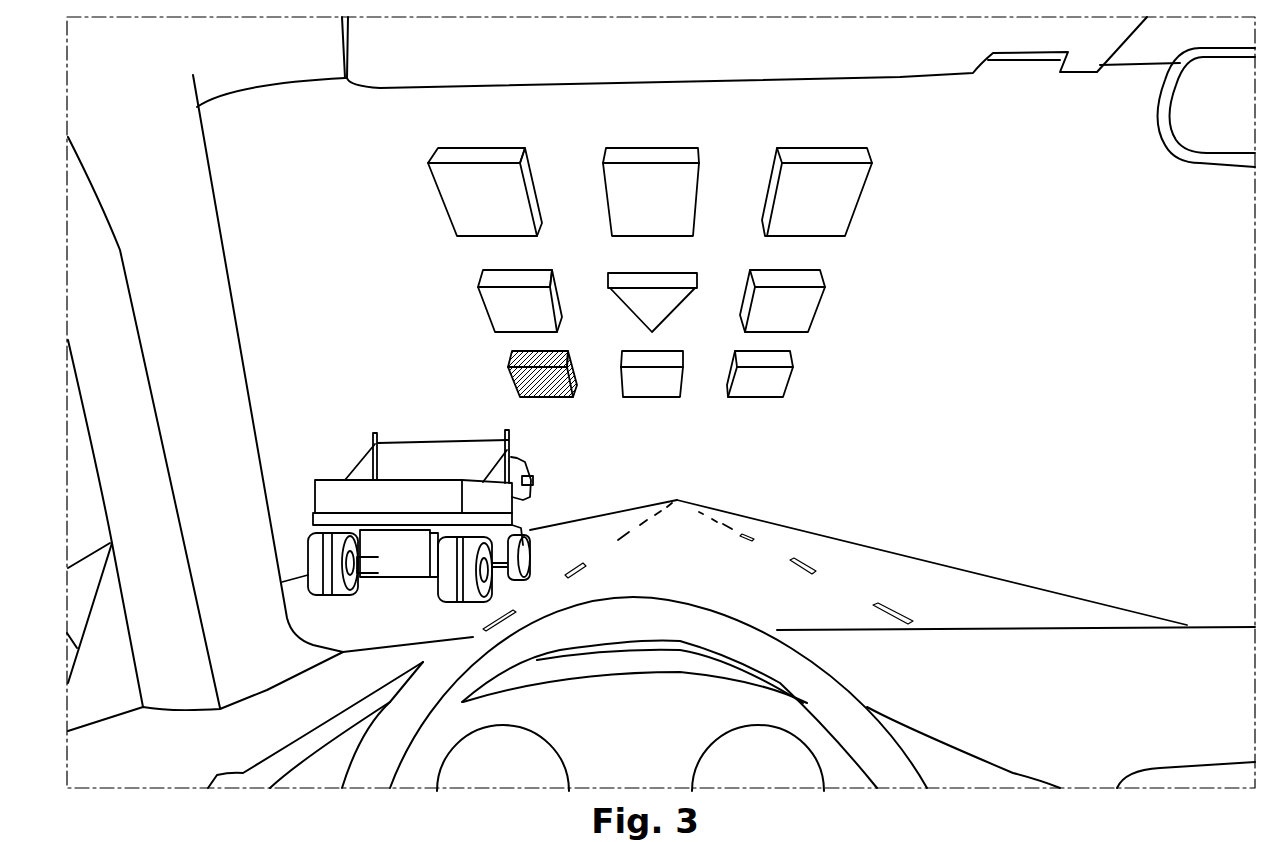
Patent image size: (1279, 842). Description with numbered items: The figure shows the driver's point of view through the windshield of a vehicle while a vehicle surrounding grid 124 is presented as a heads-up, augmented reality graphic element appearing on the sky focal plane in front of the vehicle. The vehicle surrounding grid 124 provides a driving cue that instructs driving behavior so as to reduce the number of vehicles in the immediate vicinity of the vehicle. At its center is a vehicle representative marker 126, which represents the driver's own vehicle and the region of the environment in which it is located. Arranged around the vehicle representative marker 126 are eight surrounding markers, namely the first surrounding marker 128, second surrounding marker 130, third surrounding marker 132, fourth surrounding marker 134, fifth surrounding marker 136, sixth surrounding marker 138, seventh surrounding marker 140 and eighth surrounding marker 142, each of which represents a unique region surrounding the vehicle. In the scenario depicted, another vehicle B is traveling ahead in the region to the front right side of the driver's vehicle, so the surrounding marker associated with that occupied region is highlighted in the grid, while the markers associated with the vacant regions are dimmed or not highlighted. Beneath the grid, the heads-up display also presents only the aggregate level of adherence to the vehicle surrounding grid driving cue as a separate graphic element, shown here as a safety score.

The vehicle surrounding grid 124 is at (723, 269).
The vehicle representative marker 126 is at (622, 302).
The first surrounding marker 128 is at (508, 388).
The second surrounding marker 130 is at (620, 373).
The third surrounding marker 132 is at (790, 388).
The fourth surrounding marker 134 is at (480, 303).
The fifth surrounding marker 136 is at (823, 305).
The sixth surrounding marker 138 is at (528, 176).
The seventh surrounding marker 140 is at (698, 175).
The eighth surrounding marker 142 is at (872, 175).
The another vehicle B is at (339, 466).